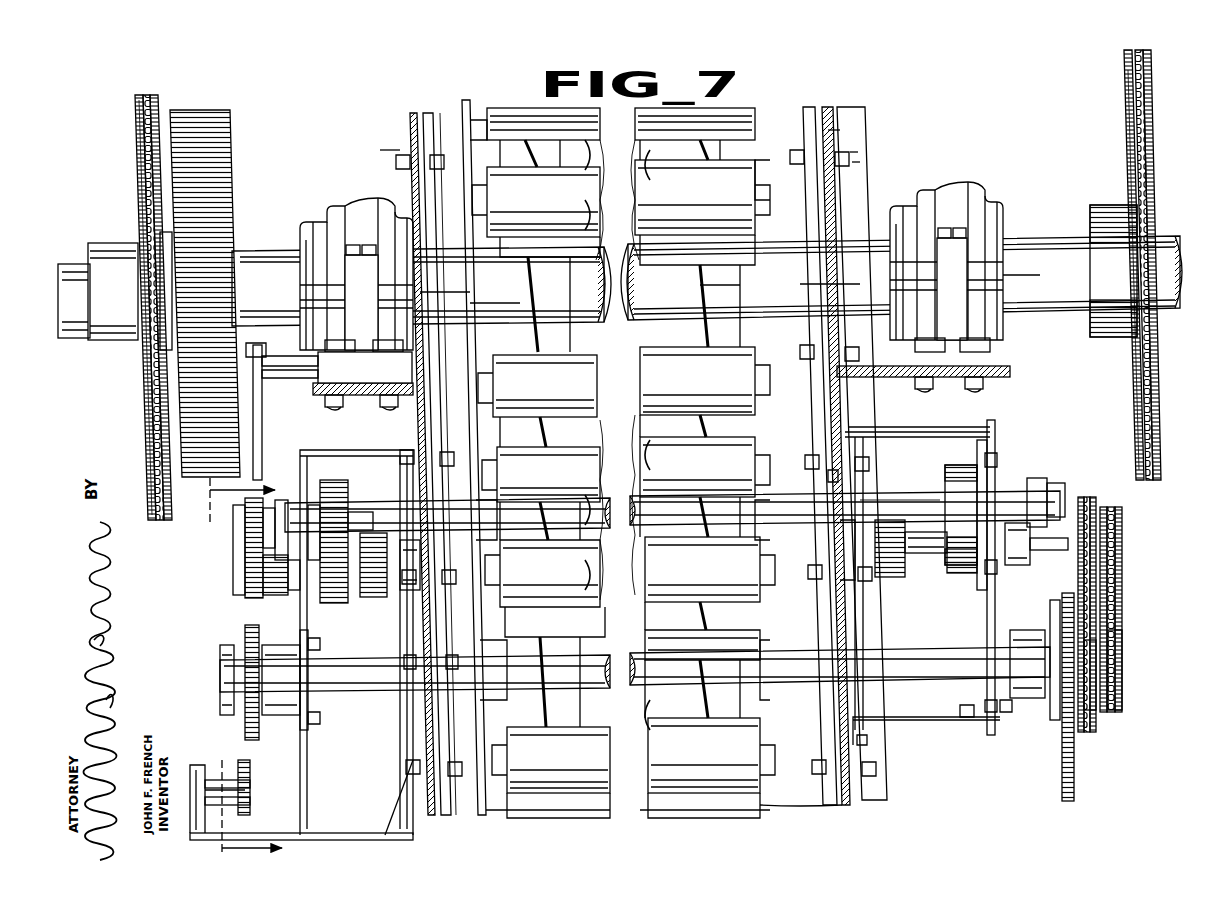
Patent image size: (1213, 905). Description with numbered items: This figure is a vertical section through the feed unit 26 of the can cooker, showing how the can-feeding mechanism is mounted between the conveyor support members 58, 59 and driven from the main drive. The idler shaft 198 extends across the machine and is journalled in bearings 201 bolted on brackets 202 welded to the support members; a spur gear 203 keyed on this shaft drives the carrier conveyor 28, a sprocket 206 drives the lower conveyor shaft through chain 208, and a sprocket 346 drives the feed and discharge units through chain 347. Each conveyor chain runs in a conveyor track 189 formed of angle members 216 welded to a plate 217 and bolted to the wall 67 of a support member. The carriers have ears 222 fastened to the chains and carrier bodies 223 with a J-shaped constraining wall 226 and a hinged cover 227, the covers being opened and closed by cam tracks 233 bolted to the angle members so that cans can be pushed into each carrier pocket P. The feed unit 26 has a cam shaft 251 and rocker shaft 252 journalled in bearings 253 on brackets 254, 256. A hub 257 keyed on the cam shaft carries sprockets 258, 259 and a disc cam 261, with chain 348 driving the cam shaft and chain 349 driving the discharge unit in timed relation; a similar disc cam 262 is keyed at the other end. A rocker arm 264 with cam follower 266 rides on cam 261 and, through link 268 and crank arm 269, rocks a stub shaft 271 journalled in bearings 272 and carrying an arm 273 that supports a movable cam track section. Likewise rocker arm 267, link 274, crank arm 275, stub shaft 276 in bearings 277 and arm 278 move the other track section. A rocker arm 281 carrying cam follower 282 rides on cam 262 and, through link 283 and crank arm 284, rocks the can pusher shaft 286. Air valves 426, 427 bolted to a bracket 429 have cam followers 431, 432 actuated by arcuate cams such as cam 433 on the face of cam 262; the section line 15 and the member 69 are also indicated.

The idler shaft 198 is at (524, 285).
The bearings 201 is at (362, 206).
The brackets 202 is at (320, 392).
The spur gear 203 is at (233, 142).
The sprocket 206 is at (144, 393).
The chain 208 is at (150, 413).
The angle members 216 is at (440, 120).
The plate 217 is at (412, 151).
The conveyor track 189 is at (458, 116).
The support member 58 is at (380, 160).
The wall 67 is at (828, 139).
The support member 59 is at (848, 152).
The frame plate 69 is at (855, 163).
The chain 347 is at (1127, 98).
The sprocket 346 is at (1139, 405).
The carrier supporting ear 222 is at (488, 190).
The carrier body 223 is at (688, 205).
The J-shaped can constraining wall 226 is at (722, 340).
The cover 227 is at (644, 435).
The cam track 233 is at (484, 364).
The carrier pocket P is at (650, 140).
The carrier conveyor 28 is at (588, 822).
The crank arm 284 is at (268, 356).
The can pusher shaft 286 is at (298, 372).
The link 283 is at (258, 433).
The bracket 254 is at (368, 446).
The arm 278 is at (412, 490).
The cam follower 282 is at (240, 510).
The rocker arm 267 is at (275, 520).
The rocker arm 281 is at (250, 545).
The link 274 is at (275, 560).
The crank arm 275 is at (285, 580).
The bearings 253 is at (330, 560).
The stub shaft 276 is at (330, 600).
The bearings 277 is at (380, 598).
The disc cam 262 is at (245, 628).
The section line 15 is at (235, 666).
The air valve 427 is at (201, 765).
The arcuate cam 433 is at (246, 770).
The cam follower 432 is at (250, 782).
The air valve 426 is at (252, 792).
The cam follower 431 is at (255, 807).
The bracket 429 is at (318, 833).
The feed unit 26 is at (1002, 420).
The bracket 256 is at (965, 430).
The arm 273 is at (838, 476).
The rocker shaft 252 is at (883, 495).
The rocker arm 264 is at (1041, 480).
The cam follower 266 is at (1051, 485).
The link 268 is at (1032, 534).
The crank arm 269 is at (1068, 551).
The stub shaft 271 is at (879, 570).
The bearings 272 is at (904, 572).
The cam shaft 251 is at (954, 592).
The chain 349 is at (1092, 500).
The chain 348 is at (1112, 517).
The sprocket 258 is at (1103, 634).
The hub 257 is at (1076, 644).
The sprocket 259 is at (1118, 652).
The disc cam 261 is at (1074, 768).